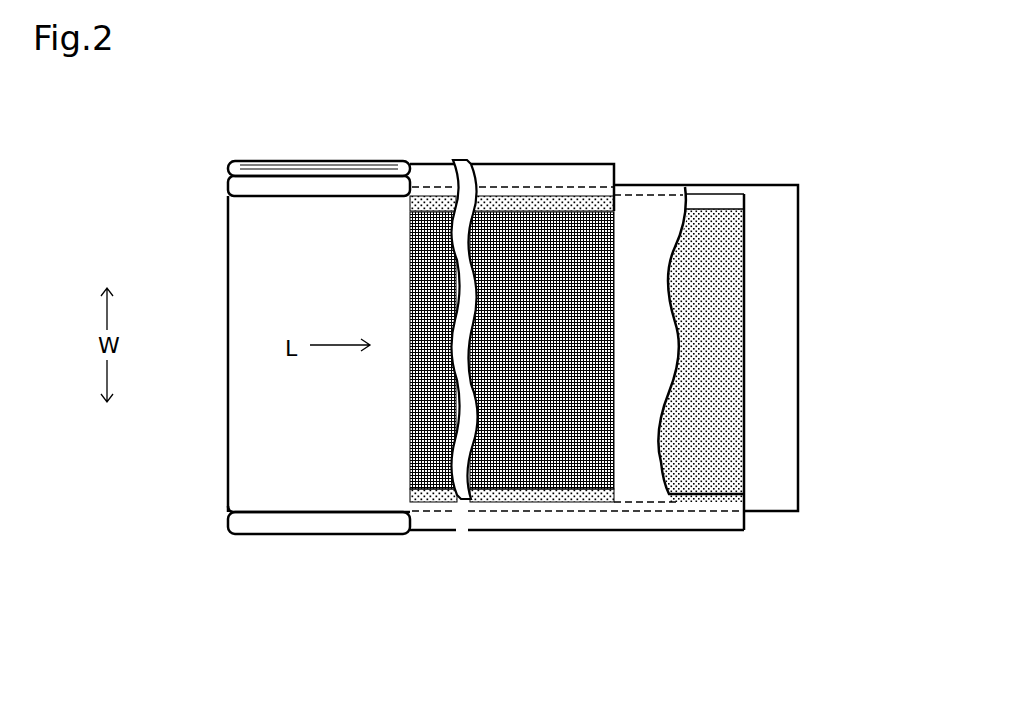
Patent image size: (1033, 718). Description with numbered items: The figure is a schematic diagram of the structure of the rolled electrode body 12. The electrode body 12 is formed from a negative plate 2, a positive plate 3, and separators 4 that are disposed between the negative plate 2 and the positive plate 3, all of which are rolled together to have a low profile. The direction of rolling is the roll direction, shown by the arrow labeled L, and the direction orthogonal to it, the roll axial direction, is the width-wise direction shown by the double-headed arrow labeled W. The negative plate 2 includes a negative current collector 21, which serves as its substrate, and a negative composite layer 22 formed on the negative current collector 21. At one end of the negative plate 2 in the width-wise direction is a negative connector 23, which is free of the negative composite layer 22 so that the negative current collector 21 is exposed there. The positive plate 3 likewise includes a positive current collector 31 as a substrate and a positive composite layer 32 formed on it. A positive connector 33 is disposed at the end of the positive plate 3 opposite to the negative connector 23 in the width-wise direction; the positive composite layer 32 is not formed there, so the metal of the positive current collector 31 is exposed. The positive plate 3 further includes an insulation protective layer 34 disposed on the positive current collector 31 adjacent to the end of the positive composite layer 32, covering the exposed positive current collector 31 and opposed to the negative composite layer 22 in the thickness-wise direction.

The negative plate 2 is at (728, 590).
The positive plate 3 is at (565, 105).
The separator 4 is at (648, 202).
The electrode body 12 is at (228, 196).
The negative current collector 21 is at (643, 534).
The negative composite layer 22 is at (710, 494).
The negative connector 23 is at (584, 520).
The positive current collector 31 is at (437, 163).
The positive composite layer 32 is at (528, 212).
The positive connector 33 is at (601, 170).
The insulation protective layer 34 is at (492, 196).